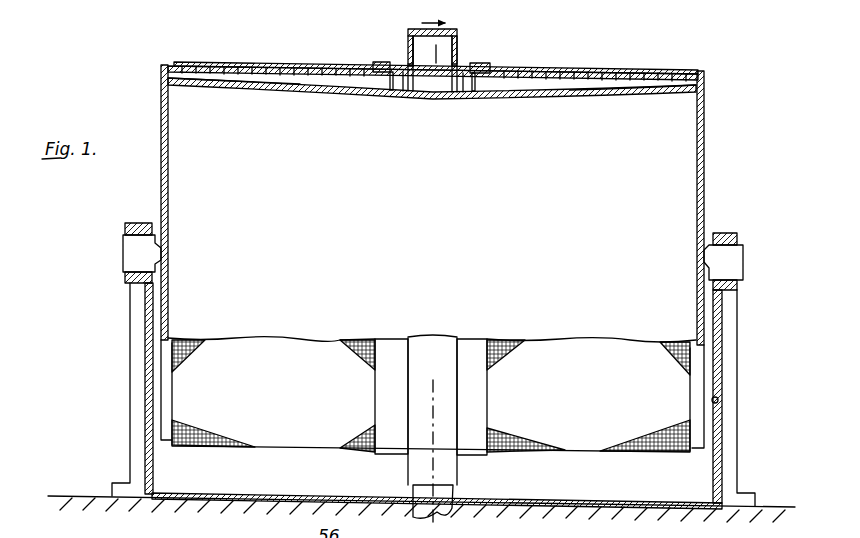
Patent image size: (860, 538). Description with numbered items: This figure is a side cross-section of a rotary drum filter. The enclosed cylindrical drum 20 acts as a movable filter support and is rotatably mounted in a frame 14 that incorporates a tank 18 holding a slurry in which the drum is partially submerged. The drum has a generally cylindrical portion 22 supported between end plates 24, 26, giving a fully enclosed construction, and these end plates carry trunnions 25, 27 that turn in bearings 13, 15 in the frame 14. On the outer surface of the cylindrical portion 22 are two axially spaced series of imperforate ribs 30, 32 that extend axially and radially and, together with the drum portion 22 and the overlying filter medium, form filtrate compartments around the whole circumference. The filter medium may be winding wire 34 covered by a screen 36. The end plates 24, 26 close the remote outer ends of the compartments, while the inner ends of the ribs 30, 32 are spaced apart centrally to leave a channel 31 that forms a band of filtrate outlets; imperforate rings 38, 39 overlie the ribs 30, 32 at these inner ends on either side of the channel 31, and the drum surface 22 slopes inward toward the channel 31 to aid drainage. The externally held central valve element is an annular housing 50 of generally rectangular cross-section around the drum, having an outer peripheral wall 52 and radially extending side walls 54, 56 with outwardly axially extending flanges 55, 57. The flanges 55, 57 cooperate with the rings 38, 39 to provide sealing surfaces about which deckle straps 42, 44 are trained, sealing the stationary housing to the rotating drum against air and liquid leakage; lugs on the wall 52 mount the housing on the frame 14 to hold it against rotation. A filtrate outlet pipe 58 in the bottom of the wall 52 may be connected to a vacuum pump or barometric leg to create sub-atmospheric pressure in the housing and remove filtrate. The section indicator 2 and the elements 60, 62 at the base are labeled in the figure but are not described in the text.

The section line 2 is at (452, 537).
The bearing 13 is at (137, 223).
The frame 14 is at (731, 327).
The bearing 15 is at (728, 233).
The tank 18 is at (720, 400).
The cylindrical drum 20 is at (436, 256).
The cylindrical portion 22 is at (547, 99).
The end plate 24 is at (161, 103).
The trunnion 25 is at (125, 262).
The end plate 26 is at (705, 189).
The trunnion 27 is at (730, 267).
The rib 30 is at (292, 90).
The channel 31 is at (432, 82).
The rib 32 is at (594, 92).
The winding wire 34 is at (622, 69).
The screen 36 is at (670, 70).
The imperforate ring 38 is at (389, 76).
The imperforate ring 39 is at (477, 79).
The deckle strap 42 is at (372, 64).
The deckle strap 44 is at (491, 63).
The shaft housing 50 is at (403, 26).
The outer peripheral wall 52 is at (455, 29).
The side wall 54 is at (407, 48).
The flange 55 is at (403, 76).
The side wall 56 is at (459, 52).
The flange 57 is at (462, 80).
The filtrate outlet pipe 58 is at (457, 492).
The base 60 is at (427, 515).
The left supporting leg 62 is at (429, 410).